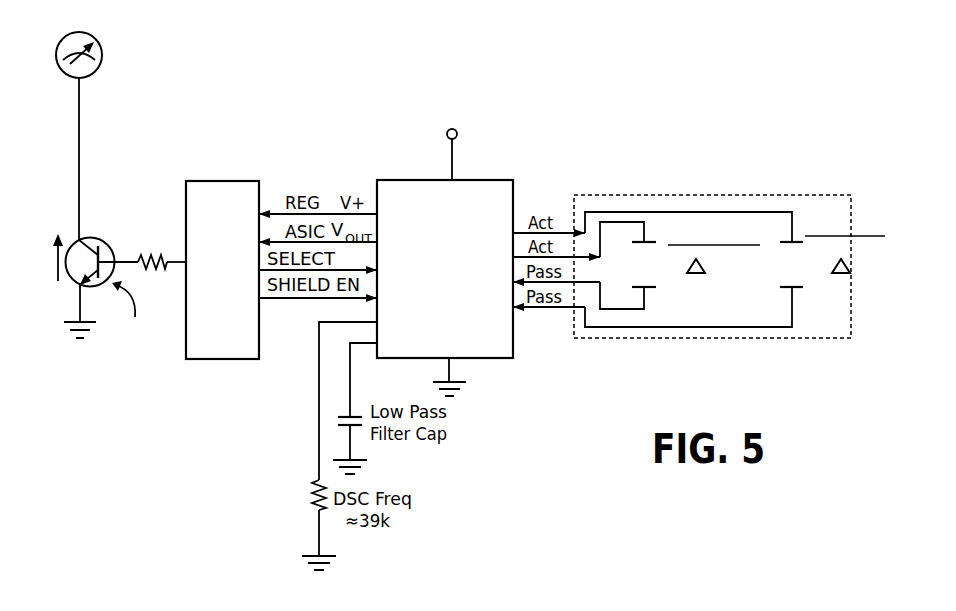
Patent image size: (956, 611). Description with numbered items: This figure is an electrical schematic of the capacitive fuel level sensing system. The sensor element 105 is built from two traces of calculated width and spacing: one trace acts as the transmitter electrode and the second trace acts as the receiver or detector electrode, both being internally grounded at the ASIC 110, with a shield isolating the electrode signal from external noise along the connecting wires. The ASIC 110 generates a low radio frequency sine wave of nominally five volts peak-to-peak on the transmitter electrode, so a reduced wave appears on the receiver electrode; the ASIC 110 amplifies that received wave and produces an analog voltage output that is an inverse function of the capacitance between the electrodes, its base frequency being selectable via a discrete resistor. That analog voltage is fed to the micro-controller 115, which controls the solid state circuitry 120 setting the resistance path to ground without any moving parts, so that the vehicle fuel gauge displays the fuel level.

The sensor element 105 is at (828, 170).
The ASIC 110 is at (391, 158).
The micro-controller 115 is at (200, 166).
The circuitry to control the ground state 120 is at (58, 281).